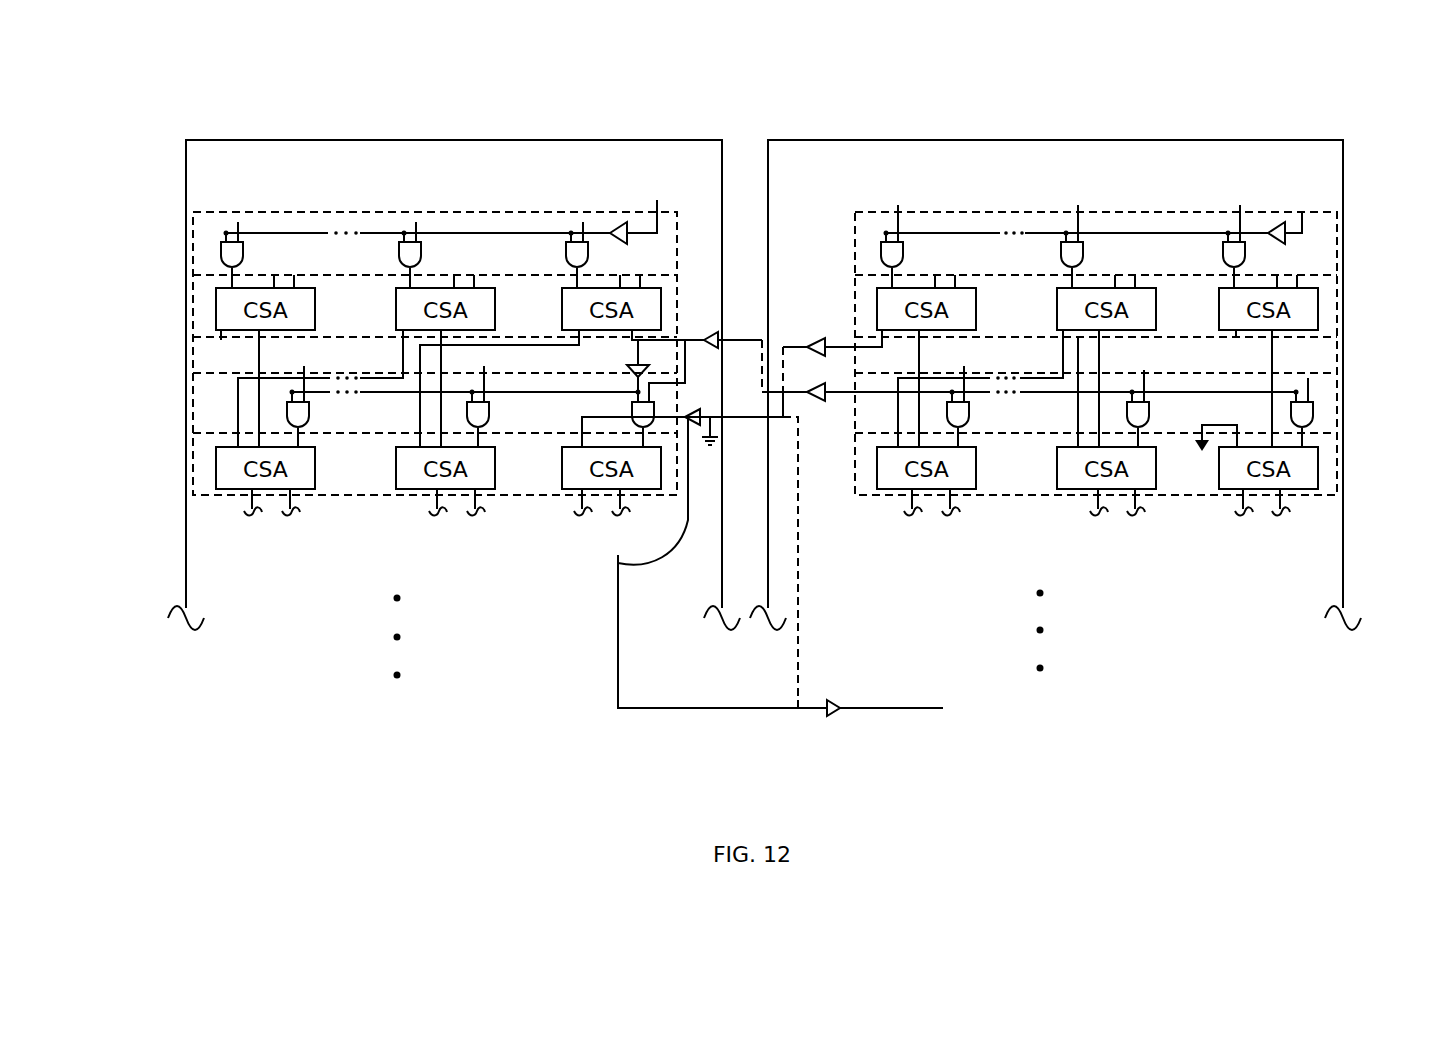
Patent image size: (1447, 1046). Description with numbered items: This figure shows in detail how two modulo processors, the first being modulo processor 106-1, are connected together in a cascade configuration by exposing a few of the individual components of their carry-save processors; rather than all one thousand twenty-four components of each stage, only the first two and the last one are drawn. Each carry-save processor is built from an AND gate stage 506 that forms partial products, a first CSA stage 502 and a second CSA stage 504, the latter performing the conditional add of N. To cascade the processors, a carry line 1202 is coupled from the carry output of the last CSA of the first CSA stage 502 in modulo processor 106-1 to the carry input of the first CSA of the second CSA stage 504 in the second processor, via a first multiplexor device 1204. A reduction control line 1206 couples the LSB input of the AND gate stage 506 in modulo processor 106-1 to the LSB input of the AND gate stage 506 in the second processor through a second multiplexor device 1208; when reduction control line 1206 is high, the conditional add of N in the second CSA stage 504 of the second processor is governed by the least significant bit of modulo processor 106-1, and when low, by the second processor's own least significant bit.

The modulo processor 106-1 is at (1078, 152).
The first CSA stage 502 is at (195, 306).
The AND gate stage 506 is at (195, 416).
The second CSA stage 504 is at (195, 477).
The reduction control line 1206 is at (690, 338).
The carry line 1202 is at (797, 347).
The second multiplexor device 1208 is at (627, 366).
The first multiplexor device 1204 is at (618, 563).